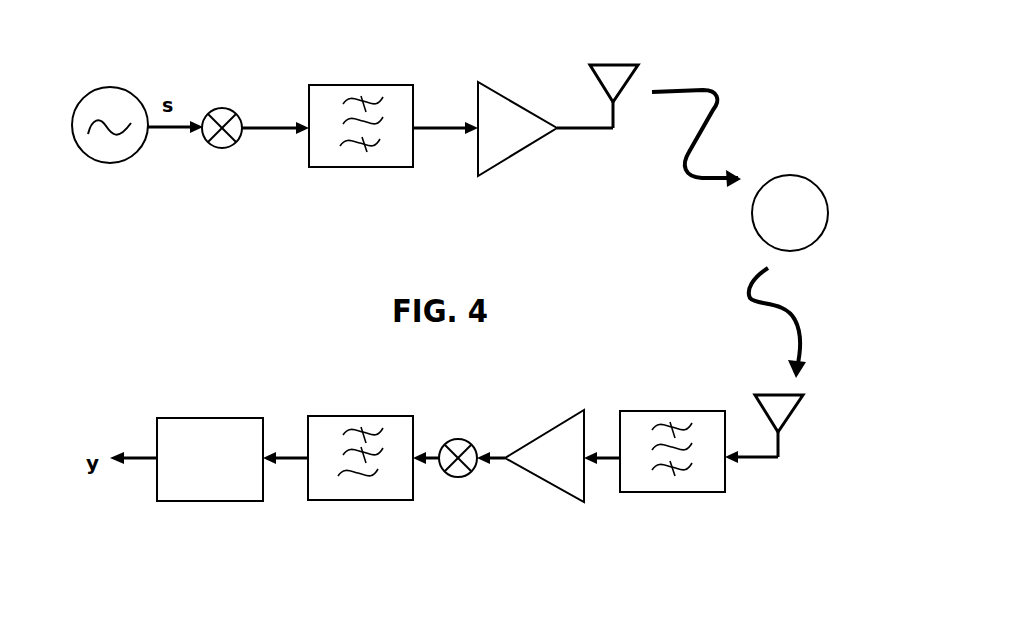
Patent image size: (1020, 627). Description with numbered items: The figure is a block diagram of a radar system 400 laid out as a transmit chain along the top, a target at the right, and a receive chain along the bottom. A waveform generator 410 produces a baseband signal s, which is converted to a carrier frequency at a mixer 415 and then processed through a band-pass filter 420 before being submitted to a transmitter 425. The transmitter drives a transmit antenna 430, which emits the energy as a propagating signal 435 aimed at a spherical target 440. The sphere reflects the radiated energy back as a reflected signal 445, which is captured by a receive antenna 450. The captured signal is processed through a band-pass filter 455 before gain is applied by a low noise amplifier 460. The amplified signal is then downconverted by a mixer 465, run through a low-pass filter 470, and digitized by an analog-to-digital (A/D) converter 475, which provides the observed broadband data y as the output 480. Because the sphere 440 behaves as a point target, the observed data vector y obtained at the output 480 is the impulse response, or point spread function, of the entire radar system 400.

The radar system 400 is at (150, 68).
The waveform generator 410 is at (129, 113).
The mixer 415 is at (233, 147).
The band-pass filter 420 is at (405, 165).
The transmitter 425 is at (518, 132).
The transmit antenna 430 is at (596, 82).
The propagating signal 435 is at (700, 135).
The spherical target 440 is at (803, 221).
The reflected signal 445 is at (750, 300).
The receive antenna 450 is at (765, 393).
The band-pass filter 455 is at (664, 485).
The low noise amplifier 460 is at (567, 473).
The mixer 465 is at (460, 477).
The low-pass filter 470 is at (405, 487).
The analog-to-digital (A/D) converter 475 is at (207, 439).
The output 480 is at (103, 505).